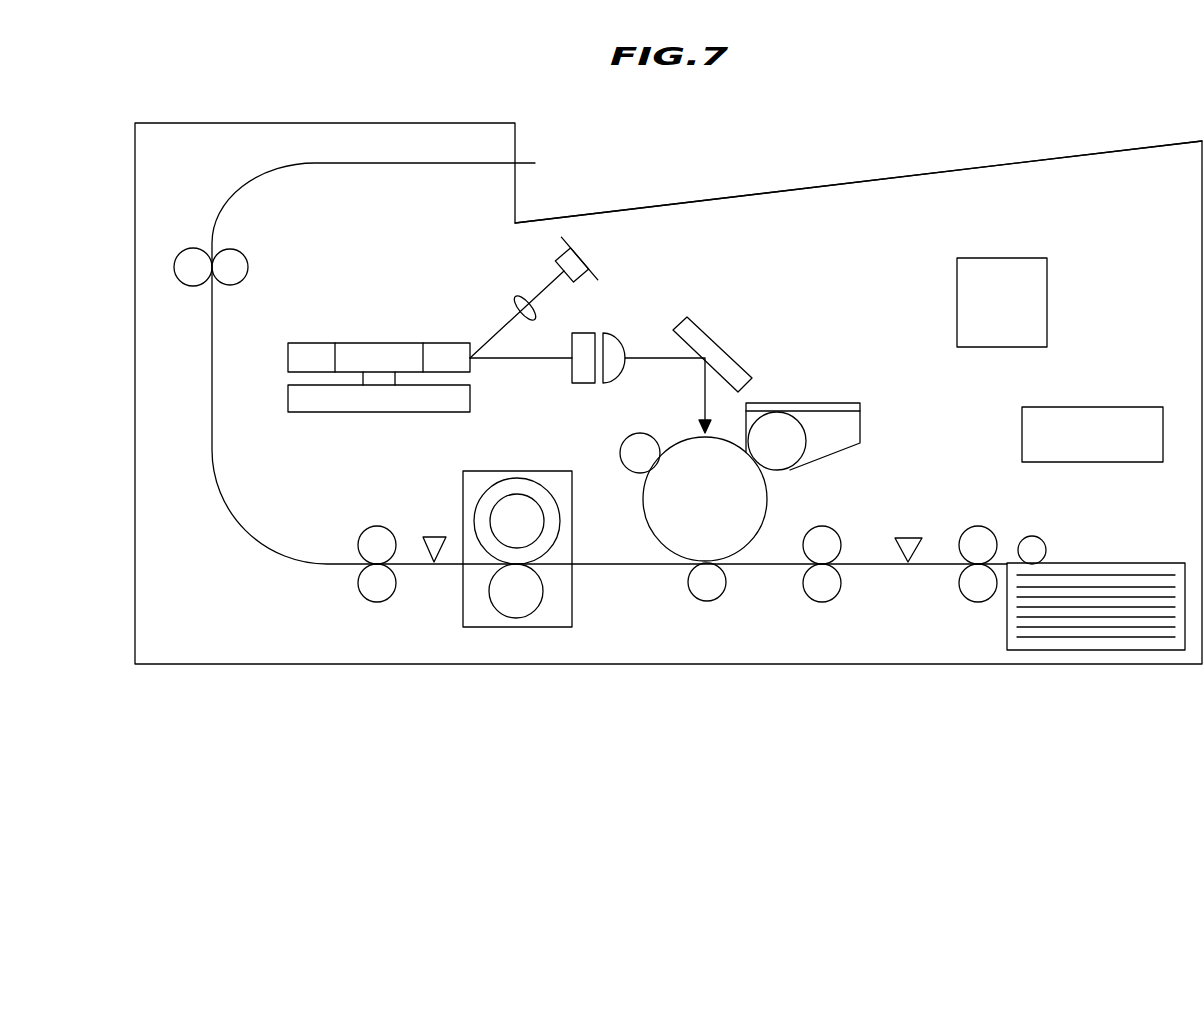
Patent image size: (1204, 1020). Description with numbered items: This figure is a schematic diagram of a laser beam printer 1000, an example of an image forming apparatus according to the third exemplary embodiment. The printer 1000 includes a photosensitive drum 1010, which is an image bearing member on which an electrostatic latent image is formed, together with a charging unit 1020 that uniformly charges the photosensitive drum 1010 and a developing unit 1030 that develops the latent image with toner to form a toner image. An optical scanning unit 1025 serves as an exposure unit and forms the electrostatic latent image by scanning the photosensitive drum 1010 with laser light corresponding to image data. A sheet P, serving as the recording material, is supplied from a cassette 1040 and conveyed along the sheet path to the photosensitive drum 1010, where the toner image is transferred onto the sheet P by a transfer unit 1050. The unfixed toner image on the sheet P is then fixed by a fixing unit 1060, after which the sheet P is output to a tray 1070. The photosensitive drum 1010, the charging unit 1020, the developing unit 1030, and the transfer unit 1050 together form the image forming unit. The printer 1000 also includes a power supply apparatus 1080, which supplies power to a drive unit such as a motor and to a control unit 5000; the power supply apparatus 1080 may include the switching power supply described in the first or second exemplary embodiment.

The laser beam printer 1000 is at (805, 664).
The tray 1070 is at (732, 197).
The optical scanning unit 1025 is at (320, 343).
The charging unit 1020 is at (640, 433).
The photosensitive drum 1010 is at (768, 497).
The developing unit 1030 is at (862, 425).
The control unit 5000 is at (1004, 258).
The power supply apparatus 1080 is at (1101, 407).
The fixing unit 1060 is at (460, 608).
The transfer unit 1050 is at (707, 601).
The cassette 1040 is at (1111, 563).
The sheet P is at (1057, 640).